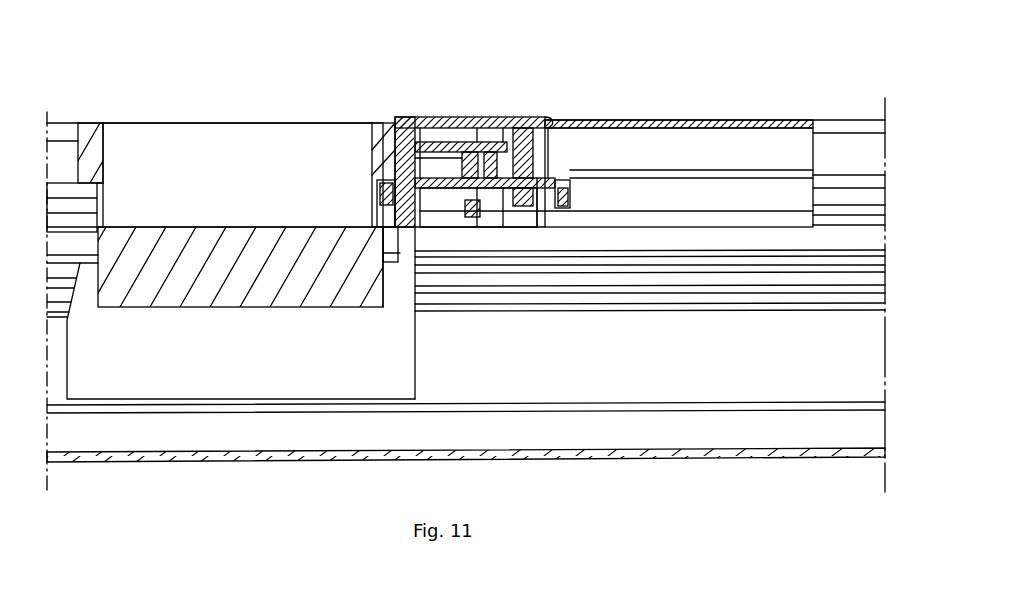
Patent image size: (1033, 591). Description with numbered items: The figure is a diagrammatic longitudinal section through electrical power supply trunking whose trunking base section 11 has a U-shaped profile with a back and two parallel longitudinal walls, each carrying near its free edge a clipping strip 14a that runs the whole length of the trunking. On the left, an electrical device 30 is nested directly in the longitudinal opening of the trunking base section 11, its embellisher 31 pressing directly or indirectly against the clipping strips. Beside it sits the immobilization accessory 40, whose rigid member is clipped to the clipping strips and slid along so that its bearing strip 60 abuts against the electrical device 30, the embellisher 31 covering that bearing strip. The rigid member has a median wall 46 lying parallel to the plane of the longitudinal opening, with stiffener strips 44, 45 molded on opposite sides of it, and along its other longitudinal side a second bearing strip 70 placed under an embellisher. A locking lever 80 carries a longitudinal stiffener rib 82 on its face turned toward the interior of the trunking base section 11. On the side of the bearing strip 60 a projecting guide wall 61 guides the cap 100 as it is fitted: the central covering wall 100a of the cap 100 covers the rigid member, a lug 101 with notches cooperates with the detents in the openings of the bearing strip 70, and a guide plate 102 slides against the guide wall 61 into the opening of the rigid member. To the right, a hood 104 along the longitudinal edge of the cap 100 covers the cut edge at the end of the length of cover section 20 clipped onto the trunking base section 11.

The trunking base section 11 is at (757, 460).
The clipping strip 14a is at (833, 180).
The cover section 20 is at (667, 120).
The electrical device 30 is at (190, 152).
The embellisher 31 is at (382, 160).
The immobilization accessory 40 is at (470, 228).
The stiffener strip 44 is at (533, 228).
The stiffener strip 45 is at (412, 270).
The median wall 46 is at (490, 228).
The bearing strip 60 is at (378, 186).
The guide wall 61 is at (390, 126).
The bearing strip 70 is at (571, 193).
The locking lever 80 is at (462, 115).
The longitudinal stiffener rib 82 is at (518, 228).
The cap 100 is at (496, 108).
The central covering wall 100a is at (480, 116).
The lug 101 is at (547, 140).
The guide plate 102 is at (385, 292).
The hood 104 is at (548, 115).